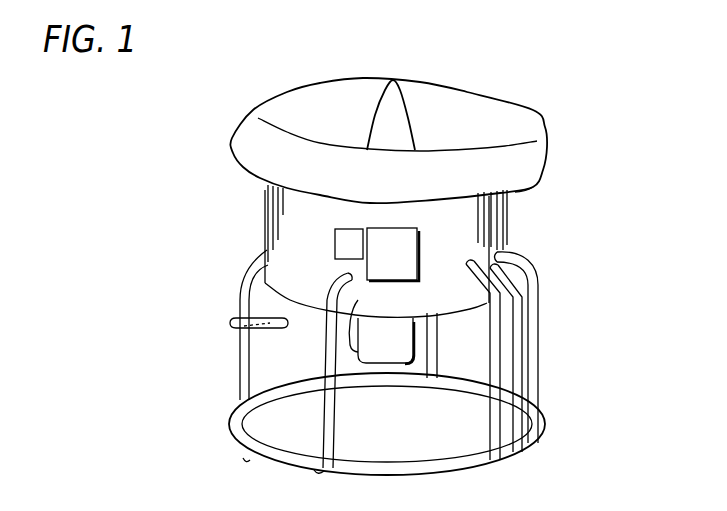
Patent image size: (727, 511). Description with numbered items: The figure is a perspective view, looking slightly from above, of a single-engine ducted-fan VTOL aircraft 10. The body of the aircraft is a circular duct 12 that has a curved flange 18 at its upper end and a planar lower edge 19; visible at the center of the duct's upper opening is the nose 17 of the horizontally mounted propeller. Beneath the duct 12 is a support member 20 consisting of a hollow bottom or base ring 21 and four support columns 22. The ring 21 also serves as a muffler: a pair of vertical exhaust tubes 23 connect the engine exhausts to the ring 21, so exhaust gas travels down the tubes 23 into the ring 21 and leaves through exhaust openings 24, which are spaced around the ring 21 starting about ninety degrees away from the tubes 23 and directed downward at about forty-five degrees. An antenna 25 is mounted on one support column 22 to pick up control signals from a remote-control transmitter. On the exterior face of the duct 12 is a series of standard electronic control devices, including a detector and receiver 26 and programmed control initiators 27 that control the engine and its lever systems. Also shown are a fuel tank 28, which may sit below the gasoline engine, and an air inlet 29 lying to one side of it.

The single-engine ducted-fan VTOL aircraft 10 is at (540, 100).
The duct 12 is at (509, 215).
The nose 17 is at (397, 82).
The curved flange 18 is at (538, 113).
The planar lower edge 19 is at (532, 186).
The support member 20 is at (226, 318).
The base ring 21 is at (418, 473).
The support columns 22 is at (241, 378).
The exhaust tubes 23 is at (540, 298).
The exhaust openings 24 is at (318, 471).
The antenna 25 is at (254, 328).
The detector and receiver 26 is at (393, 254).
The programmed control initiators 27 is at (341, 231).
The fuel tank 28 is at (386, 341).
The air inlet 29 is at (366, 320).